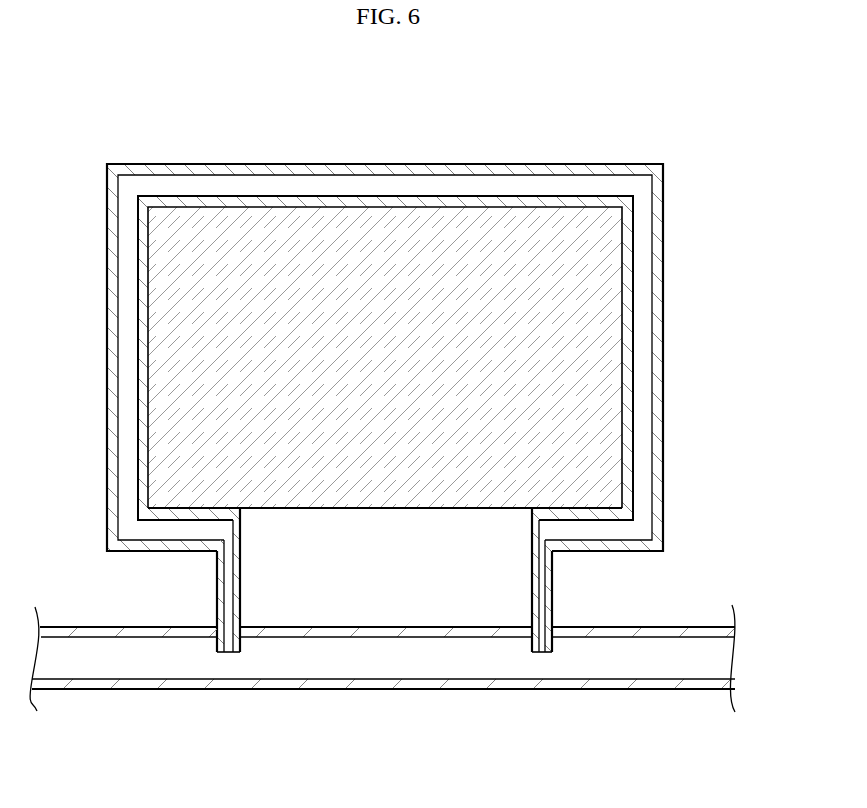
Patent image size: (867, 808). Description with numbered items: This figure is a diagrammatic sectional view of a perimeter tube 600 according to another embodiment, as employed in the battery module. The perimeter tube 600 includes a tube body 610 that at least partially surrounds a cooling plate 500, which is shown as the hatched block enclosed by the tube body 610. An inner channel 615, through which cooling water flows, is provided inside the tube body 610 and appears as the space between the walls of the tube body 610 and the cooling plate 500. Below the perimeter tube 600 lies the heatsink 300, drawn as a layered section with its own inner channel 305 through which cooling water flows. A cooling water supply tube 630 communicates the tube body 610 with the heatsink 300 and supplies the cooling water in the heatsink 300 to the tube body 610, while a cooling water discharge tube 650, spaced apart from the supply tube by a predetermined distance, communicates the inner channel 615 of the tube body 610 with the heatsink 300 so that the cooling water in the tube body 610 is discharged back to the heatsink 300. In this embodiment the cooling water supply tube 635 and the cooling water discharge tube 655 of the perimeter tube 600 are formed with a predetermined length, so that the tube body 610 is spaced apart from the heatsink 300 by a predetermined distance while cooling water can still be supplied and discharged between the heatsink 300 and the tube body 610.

The perimeter tube 600 is at (168, 123).
The tube body 610 is at (663, 293).
The inner channel 615 is at (642, 346).
The cooling plate 500 is at (587, 247).
The cooling water discharge tube 655 is at (216, 590).
The cooling water supply tube 635 is at (553, 590).
The cooling water discharge tube 650 is at (217, 648).
The cooling water supply tube 630 is at (553, 648).
The heatsink 300 is at (368, 690).
The inner channel 305 is at (447, 660).